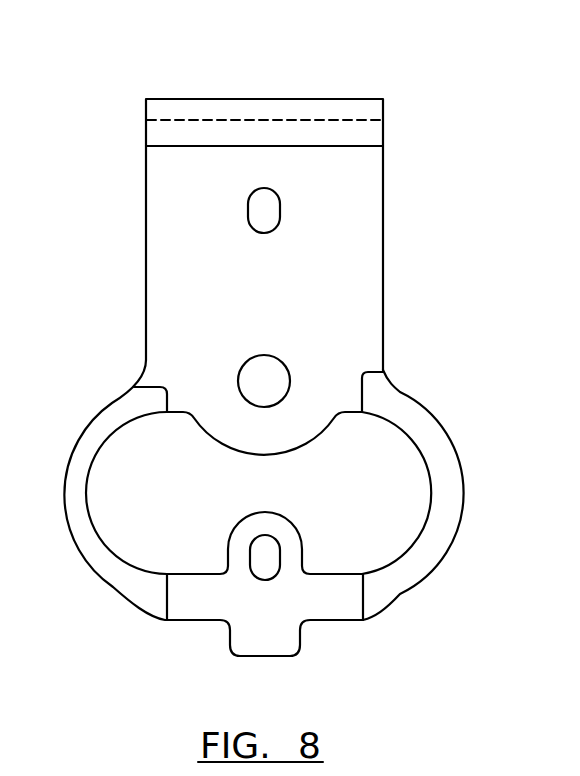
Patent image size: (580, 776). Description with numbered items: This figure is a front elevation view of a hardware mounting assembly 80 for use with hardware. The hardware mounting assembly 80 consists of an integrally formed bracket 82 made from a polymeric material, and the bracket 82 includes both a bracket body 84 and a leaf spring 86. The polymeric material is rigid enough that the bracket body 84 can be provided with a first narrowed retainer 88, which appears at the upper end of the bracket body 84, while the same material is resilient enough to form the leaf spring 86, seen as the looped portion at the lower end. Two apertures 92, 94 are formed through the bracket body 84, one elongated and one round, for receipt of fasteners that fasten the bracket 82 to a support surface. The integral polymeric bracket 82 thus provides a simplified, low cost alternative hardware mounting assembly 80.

The hardware mounting assembly 80 is at (101, 52).
The bracket 82 is at (391, 208).
The bracket body 84 is at (384, 285).
The leaf spring 86 is at (450, 495).
The first narrowed retainer 88 is at (282, 99).
The aperture 92 is at (248, 210).
The aperture 94 is at (238, 380).